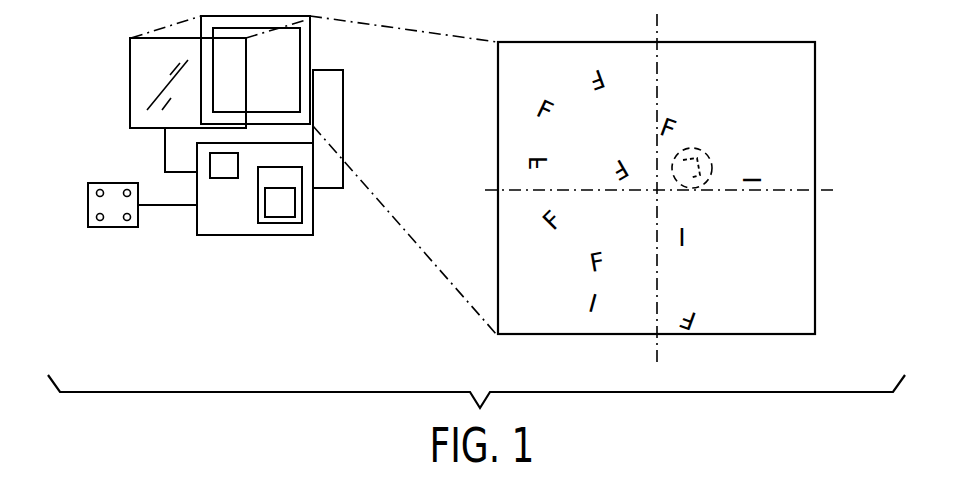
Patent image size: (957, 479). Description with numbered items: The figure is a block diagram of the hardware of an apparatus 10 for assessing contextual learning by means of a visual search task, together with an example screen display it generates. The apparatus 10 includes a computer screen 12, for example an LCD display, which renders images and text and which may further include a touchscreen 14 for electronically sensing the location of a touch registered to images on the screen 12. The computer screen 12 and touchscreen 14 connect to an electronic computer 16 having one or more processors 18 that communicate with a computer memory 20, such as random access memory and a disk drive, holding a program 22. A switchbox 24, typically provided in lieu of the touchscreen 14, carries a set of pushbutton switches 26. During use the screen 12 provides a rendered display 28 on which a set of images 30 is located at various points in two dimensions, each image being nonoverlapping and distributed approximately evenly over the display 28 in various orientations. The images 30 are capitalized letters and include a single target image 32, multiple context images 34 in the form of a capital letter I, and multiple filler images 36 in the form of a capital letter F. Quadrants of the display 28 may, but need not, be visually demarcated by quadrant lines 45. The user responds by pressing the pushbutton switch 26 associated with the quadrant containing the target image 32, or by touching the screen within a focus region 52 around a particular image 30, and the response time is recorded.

The apparatus 10 is at (100, 36).
The computer screen 12 is at (310, 40).
The touchscreen 14 is at (130, 87).
The electronic computer 16 is at (315, 213).
The processor 18 is at (223, 179).
The computer memory 20 is at (258, 207).
The program 22 is at (277, 207).
The switchbox 24 is at (88, 206).
The pushbutton switches 26 is at (126, 189).
The rendered display 28 is at (712, 42).
The images 30 is at (757, 287).
The target image 32 is at (708, 154).
The context images 34 is at (745, 97).
The filler images 36 is at (541, 295).
The quadrant lines 45 is at (832, 190).
The focus region 52 is at (707, 186).